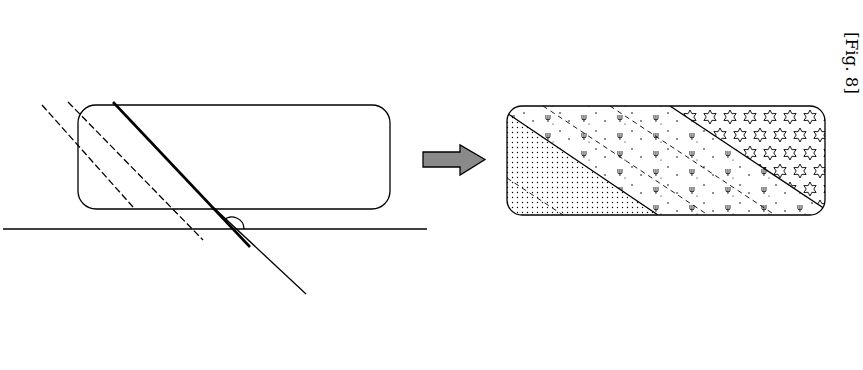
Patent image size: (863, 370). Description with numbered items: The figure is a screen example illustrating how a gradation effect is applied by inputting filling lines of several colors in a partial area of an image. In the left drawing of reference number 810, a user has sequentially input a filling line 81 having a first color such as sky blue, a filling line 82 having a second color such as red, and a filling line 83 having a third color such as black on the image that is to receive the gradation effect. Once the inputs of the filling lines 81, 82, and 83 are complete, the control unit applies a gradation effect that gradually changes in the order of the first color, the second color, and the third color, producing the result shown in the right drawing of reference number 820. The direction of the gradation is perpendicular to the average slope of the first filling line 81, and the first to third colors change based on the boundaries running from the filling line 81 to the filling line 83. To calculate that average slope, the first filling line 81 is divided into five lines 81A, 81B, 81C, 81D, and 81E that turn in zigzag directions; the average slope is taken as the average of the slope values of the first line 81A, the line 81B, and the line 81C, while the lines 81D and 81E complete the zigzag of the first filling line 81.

The drawing of the image with input filling lines 810 is at (271, 76).
The drawing of the image with gradation effect applied 820 is at (661, 75).
The first filling line 81 is at (146, 231).
The first line 81A is at (112, 186).
The third line 81B is at (125, 183).
The fifth line 81C is at (138, 178).
The fourth line 81D is at (158, 180).
The fifth line 81E is at (181, 208).
The filling line 82 is at (218, 110).
The filling line 83 is at (317, 112).